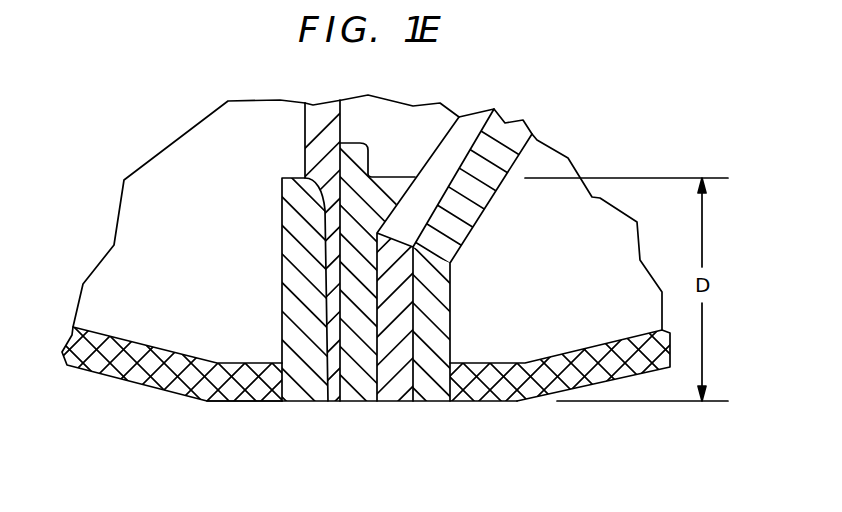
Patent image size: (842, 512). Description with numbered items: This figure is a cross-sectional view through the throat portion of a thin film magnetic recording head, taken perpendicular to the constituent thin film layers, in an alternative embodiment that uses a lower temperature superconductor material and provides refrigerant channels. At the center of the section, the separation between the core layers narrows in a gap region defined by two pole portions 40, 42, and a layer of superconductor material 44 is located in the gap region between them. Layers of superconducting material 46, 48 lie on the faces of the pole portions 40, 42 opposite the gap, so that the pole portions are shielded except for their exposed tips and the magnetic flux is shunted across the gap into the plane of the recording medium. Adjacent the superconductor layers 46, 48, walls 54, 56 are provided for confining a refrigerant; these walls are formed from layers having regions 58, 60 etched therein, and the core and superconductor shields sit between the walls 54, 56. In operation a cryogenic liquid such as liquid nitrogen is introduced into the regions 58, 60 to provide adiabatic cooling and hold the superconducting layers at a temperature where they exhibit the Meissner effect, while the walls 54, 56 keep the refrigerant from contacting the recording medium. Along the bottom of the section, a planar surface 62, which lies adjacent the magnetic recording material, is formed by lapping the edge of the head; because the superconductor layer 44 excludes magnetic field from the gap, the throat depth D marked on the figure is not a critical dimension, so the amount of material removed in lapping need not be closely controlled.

The pole portion 40 is at (335, 402).
The pole portion 42 is at (392, 402).
The layer of superconductor material 44 is at (363, 402).
The layer of superconducting material 46 is at (315, 402).
The layer of superconducting material 48 is at (437, 402).
The wall 54 is at (207, 402).
The wall 56 is at (525, 402).
The region 58 is at (251, 336).
The region 60 is at (475, 338).
The planar surface 62 is at (493, 402).